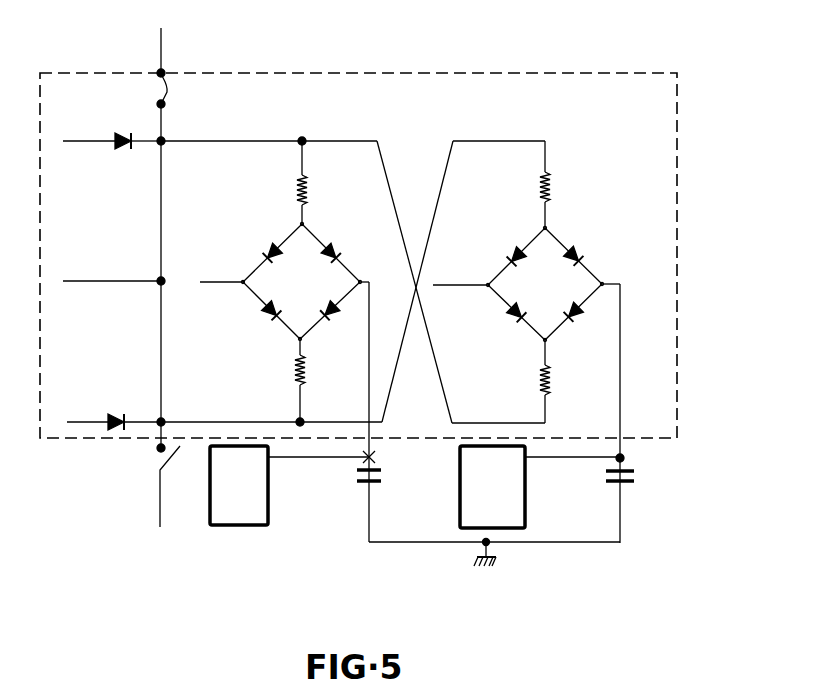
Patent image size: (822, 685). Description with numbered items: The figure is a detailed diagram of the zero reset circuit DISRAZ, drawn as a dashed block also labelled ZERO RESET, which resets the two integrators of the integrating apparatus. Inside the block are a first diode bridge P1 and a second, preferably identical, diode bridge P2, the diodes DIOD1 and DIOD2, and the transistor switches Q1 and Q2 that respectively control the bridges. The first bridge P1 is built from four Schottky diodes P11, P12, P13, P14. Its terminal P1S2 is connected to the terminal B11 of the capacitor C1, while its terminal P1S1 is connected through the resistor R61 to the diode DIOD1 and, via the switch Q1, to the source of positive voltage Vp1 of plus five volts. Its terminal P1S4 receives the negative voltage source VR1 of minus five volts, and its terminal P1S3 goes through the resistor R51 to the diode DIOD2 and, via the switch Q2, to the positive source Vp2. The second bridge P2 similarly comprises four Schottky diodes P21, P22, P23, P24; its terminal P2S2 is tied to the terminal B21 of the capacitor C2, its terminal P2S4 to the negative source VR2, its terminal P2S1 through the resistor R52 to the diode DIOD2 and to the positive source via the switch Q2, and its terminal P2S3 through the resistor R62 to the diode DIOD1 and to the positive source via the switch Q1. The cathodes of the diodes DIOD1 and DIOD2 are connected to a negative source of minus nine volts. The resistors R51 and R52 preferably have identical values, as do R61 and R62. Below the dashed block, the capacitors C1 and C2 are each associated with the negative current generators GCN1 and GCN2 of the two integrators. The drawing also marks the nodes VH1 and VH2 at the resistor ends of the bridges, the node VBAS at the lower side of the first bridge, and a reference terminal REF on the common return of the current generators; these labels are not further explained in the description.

The zero reset circuit DISRAZ is at (473, 73).
The zero reset circuit ZERO RESET is at (672, 108).
The source of positive voltage Vp1 is at (171, 36).
The source of positive voltage Vp2 is at (178, 546).
The transistor switch Q1 is at (177, 88).
The transistor switch Q2 is at (175, 485).
The diode DIOD1 is at (117, 148).
The diode DIOD2 is at (110, 430).
The source of negative voltage VR1 is at (153, 267).
The source of negative voltage VR2 is at (464, 271).
The high voltage node VH (left) VH1 is at (269, 129).
The high voltage node VH (right) VH2 is at (560, 409).
The resistor R61 is at (297, 179).
The resistor R51 is at (294, 368).
The resistor R52 is at (540, 178).
The resistor R62 is at (540, 395).
The first diode bridge P1 is at (305, 278).
The Schottky diode P11 is at (300, 252).
The Schottky diode P12 is at (344, 248).
The Schottky diode P13 is at (318, 306).
The Schottky diode P14 is at (258, 327).
The bridge terminal P1S1 is at (301, 222).
The bridge terminal P1S2 is at (361, 284).
The bridge terminal P1S3 is at (327, 338).
The bridge terminal P1S4 is at (243, 285).
The second diode bridge P2 is at (545, 277).
The Schottky diode P21 is at (522, 256).
The Schottky diode P22 is at (578, 245).
The Schottky diode P23 is at (590, 313).
The Schottky diode P24 is at (512, 315).
The bridge terminal P2S1 is at (544, 226).
The bridge terminal P2S2 is at (627, 272).
The bridge terminal P2S3 is at (568, 351).
The bridge terminal P2S4 is at (488, 288).
The low voltage node VBAS is at (321, 405).
The negative current generator GCN1 is at (248, 513).
The negative current generator GCN2 is at (468, 518).
The terminal of capacitive member B11 is at (407, 465).
The terminal of capacitive member B21 is at (624, 457).
The capacitor C1 is at (372, 482).
The capacitor C2 is at (622, 484).
The reference potential REF=+5V REF is at (536, 564).